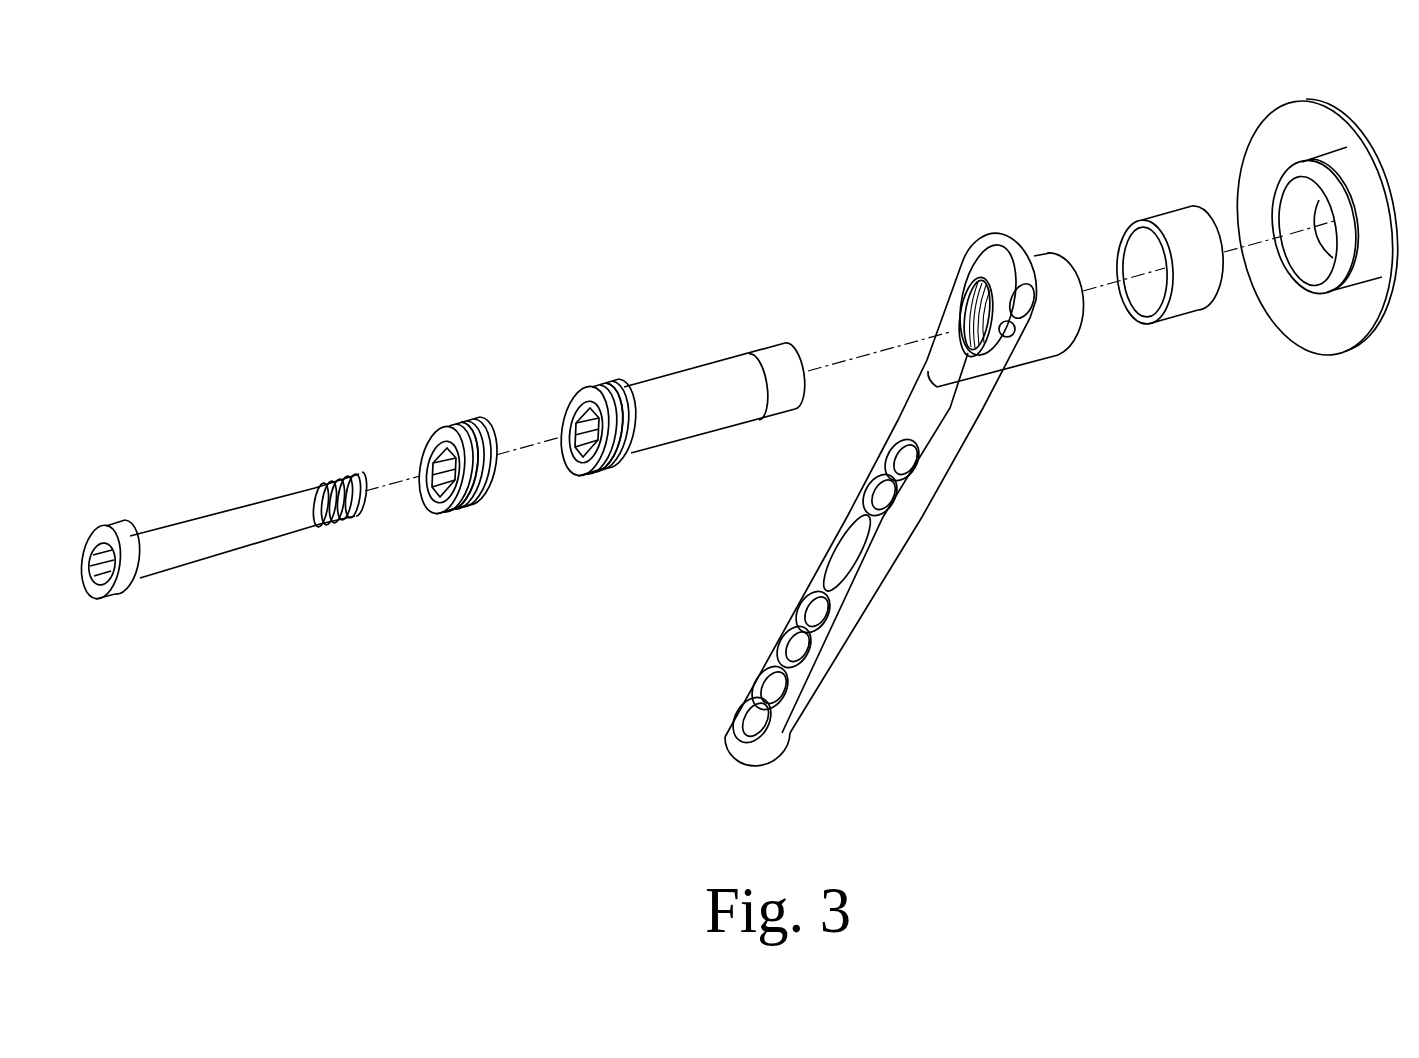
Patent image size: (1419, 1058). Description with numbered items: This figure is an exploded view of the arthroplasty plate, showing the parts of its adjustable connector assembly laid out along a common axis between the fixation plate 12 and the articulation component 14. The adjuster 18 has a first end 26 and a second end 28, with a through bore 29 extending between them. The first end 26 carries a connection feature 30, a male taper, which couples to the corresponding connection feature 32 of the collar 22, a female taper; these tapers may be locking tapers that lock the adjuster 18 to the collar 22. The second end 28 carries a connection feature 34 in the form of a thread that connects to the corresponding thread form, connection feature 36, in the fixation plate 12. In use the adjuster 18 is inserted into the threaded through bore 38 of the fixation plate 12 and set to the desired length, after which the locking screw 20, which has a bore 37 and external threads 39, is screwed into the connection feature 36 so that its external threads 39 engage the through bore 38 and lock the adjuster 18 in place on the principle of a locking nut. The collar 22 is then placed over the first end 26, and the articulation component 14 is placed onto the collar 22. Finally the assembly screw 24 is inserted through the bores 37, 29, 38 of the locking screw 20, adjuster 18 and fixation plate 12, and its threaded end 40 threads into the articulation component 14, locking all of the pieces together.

The fixation plate 12 is at (916, 508).
The articulation component 14 is at (1325, 112).
The adjuster 18 is at (687, 373).
The locking screw 20 is at (450, 424).
The collar 22 is at (1160, 212).
The assembly screw 24 is at (213, 511).
The first end 26 is at (767, 352).
The second end 28 is at (577, 387).
The through bore 29 is at (556, 406).
The connection feature 30 is at (783, 346).
The connection feature 32 is at (1126, 258).
The connection feature 34 is at (608, 383).
The connection feature 36 is at (994, 245).
The bore 37 is at (418, 450).
The through bore 38 is at (960, 287).
The external threads 39 is at (463, 423).
The threaded end 40 is at (340, 483).